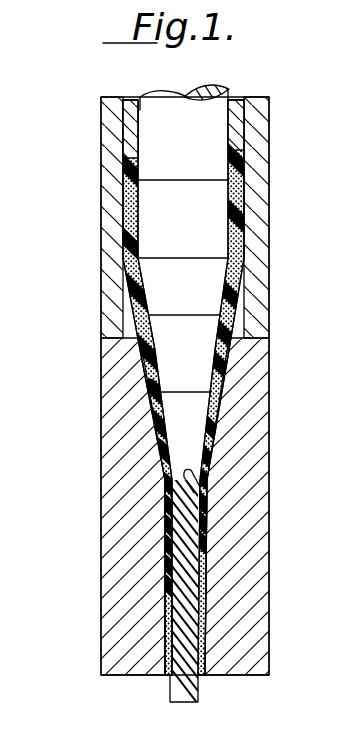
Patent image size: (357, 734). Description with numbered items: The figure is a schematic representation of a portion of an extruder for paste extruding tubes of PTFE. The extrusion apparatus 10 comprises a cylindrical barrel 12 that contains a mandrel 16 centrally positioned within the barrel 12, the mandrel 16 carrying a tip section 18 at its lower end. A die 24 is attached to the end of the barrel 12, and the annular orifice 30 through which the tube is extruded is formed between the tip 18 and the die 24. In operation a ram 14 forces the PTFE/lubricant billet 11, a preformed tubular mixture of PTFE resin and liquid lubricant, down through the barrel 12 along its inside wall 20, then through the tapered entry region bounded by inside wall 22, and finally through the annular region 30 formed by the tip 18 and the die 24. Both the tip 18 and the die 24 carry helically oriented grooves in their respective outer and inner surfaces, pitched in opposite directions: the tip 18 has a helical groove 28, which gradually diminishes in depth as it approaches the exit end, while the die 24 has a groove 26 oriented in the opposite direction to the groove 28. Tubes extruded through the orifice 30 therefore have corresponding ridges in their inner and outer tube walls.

The extrusion apparatus 10 is at (299, 187).
The PTFE/lubricant billet 11 is at (237, 225).
The cylindrical barrel 12 is at (270, 263).
The ram 14 is at (232, 130).
The mandrel 16 is at (167, 139).
The tip section 18 is at (158, 242).
The inside wall 20 is at (135, 219).
The inside wall of tapered entry region 22 is at (150, 308).
The die 24 is at (101, 531).
The groove 26 is at (163, 626).
The helical groove 28 is at (195, 573).
The annular orifice 30 is at (166, 680).